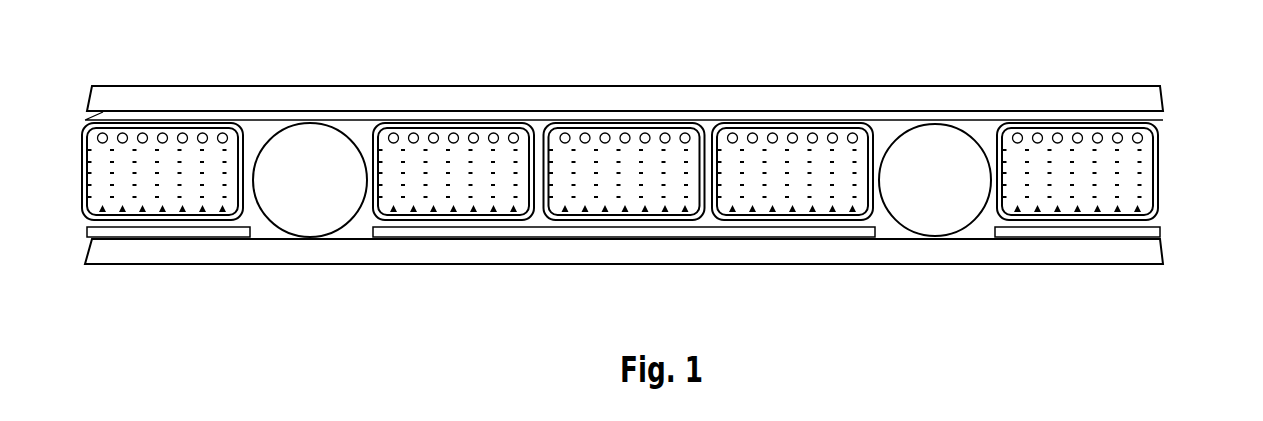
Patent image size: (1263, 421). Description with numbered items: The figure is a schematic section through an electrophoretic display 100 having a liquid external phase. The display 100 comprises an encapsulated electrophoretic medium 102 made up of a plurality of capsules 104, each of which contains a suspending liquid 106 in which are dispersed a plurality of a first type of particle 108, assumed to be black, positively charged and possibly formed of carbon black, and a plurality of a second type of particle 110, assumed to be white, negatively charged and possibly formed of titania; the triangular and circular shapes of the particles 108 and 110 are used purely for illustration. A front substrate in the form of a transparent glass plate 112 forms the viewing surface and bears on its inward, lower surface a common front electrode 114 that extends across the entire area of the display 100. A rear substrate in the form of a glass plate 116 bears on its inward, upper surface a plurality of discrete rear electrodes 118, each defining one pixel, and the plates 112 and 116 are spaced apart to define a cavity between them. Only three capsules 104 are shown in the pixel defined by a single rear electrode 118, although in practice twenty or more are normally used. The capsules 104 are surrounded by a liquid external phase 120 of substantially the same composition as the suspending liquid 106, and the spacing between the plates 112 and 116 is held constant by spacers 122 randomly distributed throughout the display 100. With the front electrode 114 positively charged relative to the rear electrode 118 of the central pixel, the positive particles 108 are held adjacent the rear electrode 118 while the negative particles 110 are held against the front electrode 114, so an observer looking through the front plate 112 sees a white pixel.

The electrophoretic display 100 is at (625, 74).
The encapsulated electrophoretic medium 102 is at (1111, 131).
The capsule 104 is at (863, 128).
The suspending liquid 106 is at (633, 177).
The first type of particle 108 is at (515, 210).
The second type of particle 110 is at (453, 128).
The transparent glass plate 112 is at (710, 95).
The common front electrode 114 is at (943, 115).
The glass plate 116 is at (772, 250).
The rear electrode 118 is at (598, 232).
The liquid external phase 120 is at (985, 128).
The spacer 122 is at (927, 177).